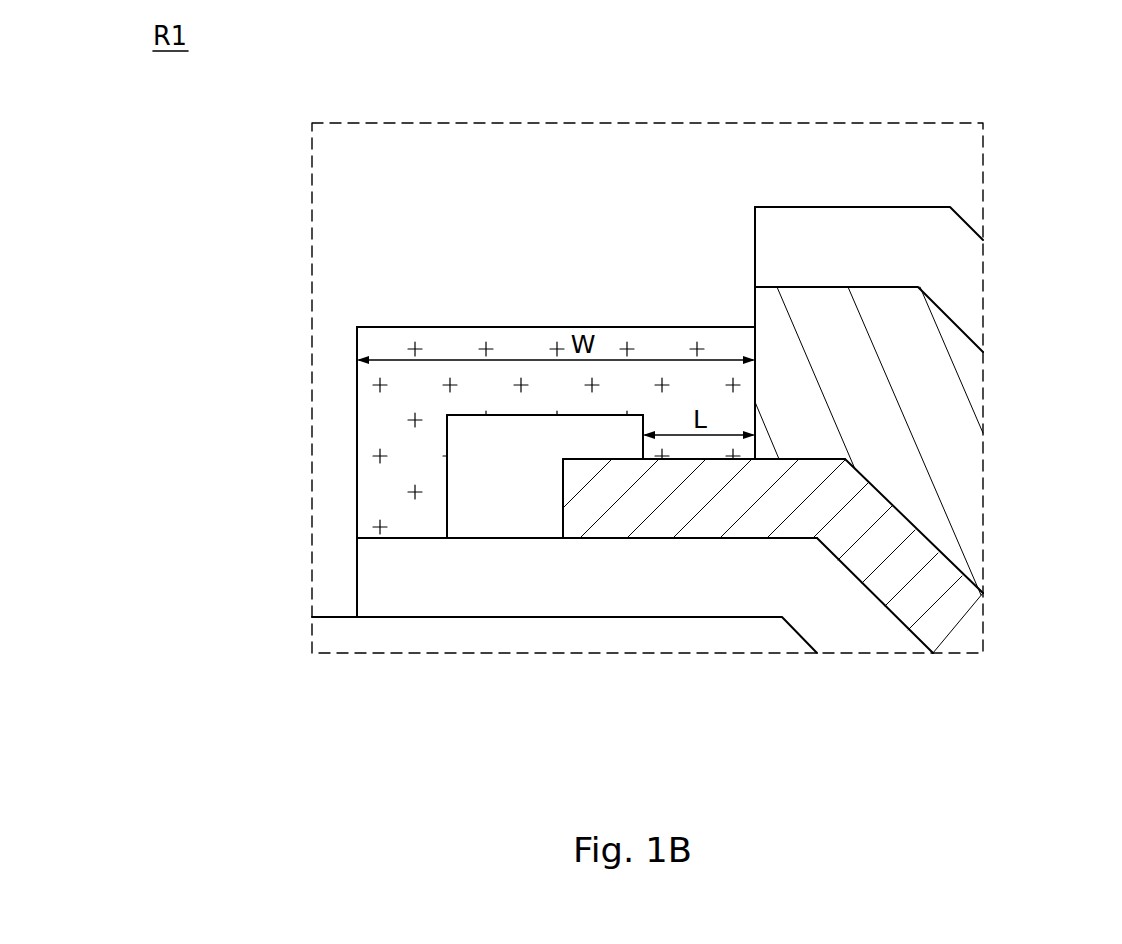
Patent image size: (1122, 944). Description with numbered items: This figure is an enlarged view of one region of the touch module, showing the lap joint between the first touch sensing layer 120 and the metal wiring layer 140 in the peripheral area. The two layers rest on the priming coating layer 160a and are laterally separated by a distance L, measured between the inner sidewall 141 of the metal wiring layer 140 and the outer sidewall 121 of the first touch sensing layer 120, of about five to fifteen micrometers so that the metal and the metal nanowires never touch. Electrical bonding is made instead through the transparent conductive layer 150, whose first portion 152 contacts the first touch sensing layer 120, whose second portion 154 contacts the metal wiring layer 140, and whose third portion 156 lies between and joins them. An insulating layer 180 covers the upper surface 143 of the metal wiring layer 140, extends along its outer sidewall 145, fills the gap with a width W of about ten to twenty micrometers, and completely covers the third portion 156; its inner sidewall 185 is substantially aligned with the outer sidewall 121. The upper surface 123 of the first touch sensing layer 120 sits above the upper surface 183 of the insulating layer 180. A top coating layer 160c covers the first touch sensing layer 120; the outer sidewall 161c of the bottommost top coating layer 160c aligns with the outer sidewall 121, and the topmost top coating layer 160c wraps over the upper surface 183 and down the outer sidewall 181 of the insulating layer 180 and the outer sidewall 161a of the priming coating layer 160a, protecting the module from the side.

The first touch sensing layer 120 is at (888, 332).
The outer sidewall of the first touch sensing layer 121 is at (759, 373).
The upper surface of the first touch sensing layer 123 is at (836, 285).
The metal wiring layer 140 is at (435, 305).
The inner sidewall of the metal wiring layer 141 is at (641, 446).
The upper surface of the metal wiring layer 143 is at (462, 412).
The outer sidewall of the metal wiring layer 145 is at (443, 522).
The transparent conductive layer 150 is at (773, 616).
The first portion of the transparent conductive layer 152 is at (899, 588).
The second portion of the transparent conductive layer 154 is at (612, 532).
The third portion of the transparent conductive layer 156 is at (733, 532).
The priming coating layer 160a is at (452, 585).
The top coating layer 160c is at (977, 170).
The outer sidewall of the priming coating layer 161a is at (355, 586).
The outer sidewall of the bottommost top coating layer 161c is at (753, 232).
The insulating layer 180 is at (496, 303).
The outer sidewall of the insulating layer 181 is at (355, 339).
The upper surface of the insulating layer 183 is at (518, 325).
The inner sidewall of the insulating layer 185 is at (752, 349).